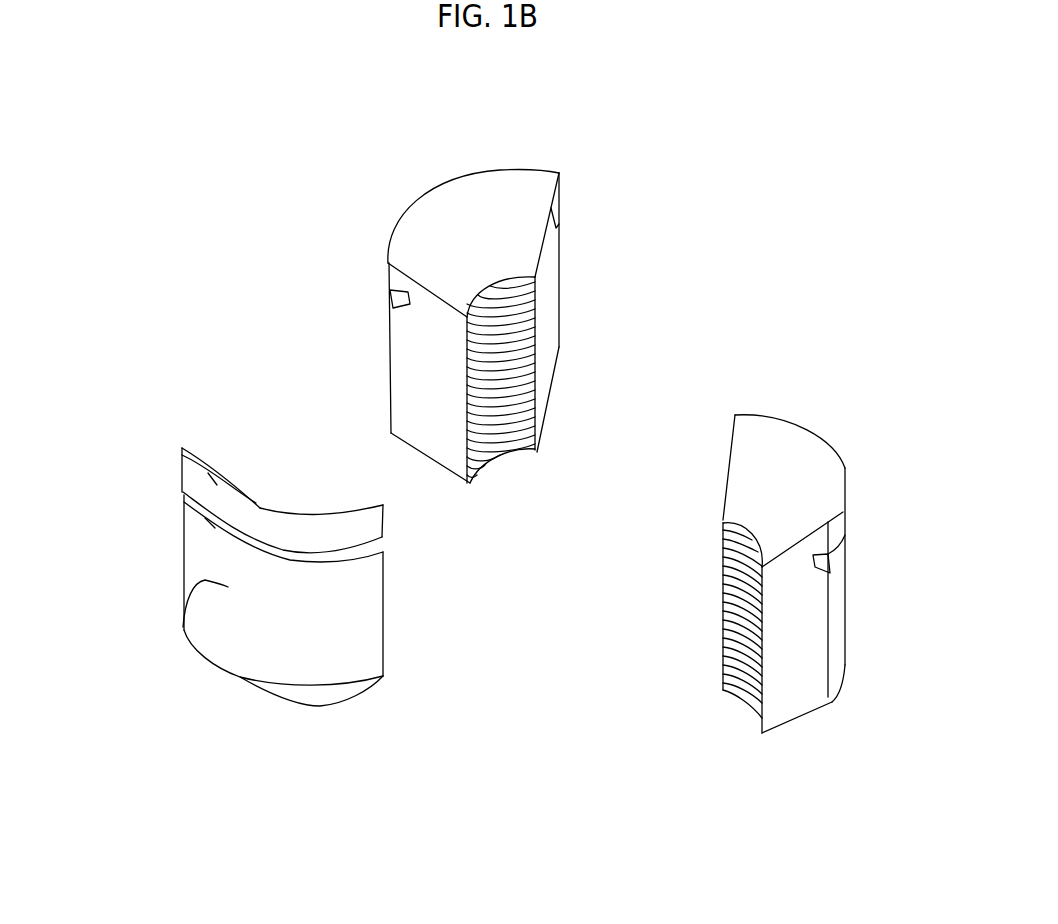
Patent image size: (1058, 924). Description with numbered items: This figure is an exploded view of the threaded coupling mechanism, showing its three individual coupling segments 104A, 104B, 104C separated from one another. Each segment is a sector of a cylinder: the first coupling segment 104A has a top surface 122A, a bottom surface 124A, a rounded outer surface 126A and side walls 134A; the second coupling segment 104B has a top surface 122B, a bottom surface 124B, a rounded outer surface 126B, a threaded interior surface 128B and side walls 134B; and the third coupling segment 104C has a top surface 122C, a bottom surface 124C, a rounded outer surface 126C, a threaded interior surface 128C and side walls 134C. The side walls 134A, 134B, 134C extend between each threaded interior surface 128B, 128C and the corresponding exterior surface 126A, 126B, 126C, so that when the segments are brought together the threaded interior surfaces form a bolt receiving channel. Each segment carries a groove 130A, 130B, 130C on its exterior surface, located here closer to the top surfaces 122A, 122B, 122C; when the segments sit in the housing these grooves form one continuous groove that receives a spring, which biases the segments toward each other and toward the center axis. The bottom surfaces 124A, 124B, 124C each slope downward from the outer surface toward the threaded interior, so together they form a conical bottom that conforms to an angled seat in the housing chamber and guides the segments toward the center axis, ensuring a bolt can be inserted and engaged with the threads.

The coupling segment 104A is at (270, 574).
The top surface 122A is at (182, 448).
The bottom surface 124A is at (305, 693).
The rounded outer surface 126A is at (183, 630).
The groove 130A is at (182, 505).
The side walls 134A is at (182, 565).
The coupling segment 104B is at (471, 330).
The top surface 122B is at (505, 208).
The bottom surface 124B is at (552, 390).
The rounded outer surface 126B is at (389, 345).
The threaded interior surface 128B is at (493, 402).
The groove 130B is at (557, 223).
The side walls 134B is at (543, 328).
The coupling segment 104C is at (804, 602).
The top surface 122C is at (808, 482).
The bottom surface 124C is at (800, 697).
The rounded outer surface 126C is at (846, 607).
The threaded interior surface 128C is at (728, 693).
The groove 130C is at (846, 543).
The side walls 134C is at (729, 470).